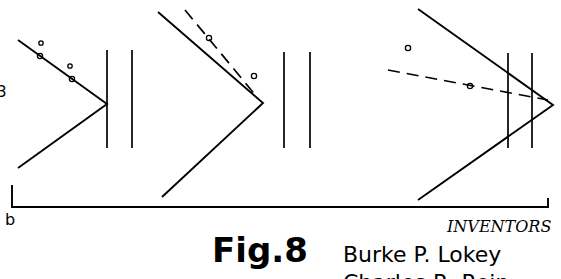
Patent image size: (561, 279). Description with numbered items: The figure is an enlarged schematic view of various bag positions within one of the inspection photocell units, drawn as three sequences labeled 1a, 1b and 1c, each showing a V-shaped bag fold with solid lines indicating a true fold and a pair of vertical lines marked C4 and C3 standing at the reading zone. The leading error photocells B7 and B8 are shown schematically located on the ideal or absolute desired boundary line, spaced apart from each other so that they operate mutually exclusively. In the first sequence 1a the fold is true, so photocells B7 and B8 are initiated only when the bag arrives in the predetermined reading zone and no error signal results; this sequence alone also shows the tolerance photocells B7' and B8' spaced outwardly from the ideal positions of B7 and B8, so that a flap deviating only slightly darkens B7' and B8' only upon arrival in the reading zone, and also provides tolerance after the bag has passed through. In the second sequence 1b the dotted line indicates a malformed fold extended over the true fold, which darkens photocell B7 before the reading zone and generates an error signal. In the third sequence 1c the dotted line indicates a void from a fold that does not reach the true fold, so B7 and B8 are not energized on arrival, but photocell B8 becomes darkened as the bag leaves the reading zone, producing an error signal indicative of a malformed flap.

The leading error photocell B7 is at (219, 59).
The leading error photocell B8 is at (266, 95).
The tolerance-positioned photocell B7' is at (59, 28).
The tolerance-positioned photocell B8' is at (85, 57).
The plane C4 is at (307, 99).
The plane C3 is at (344, 99).
The reflector configuration 1a is at (65, 119).
The reflector configuration 1b is at (243, 226).
The reflector configuration 1c is at (463, 105).